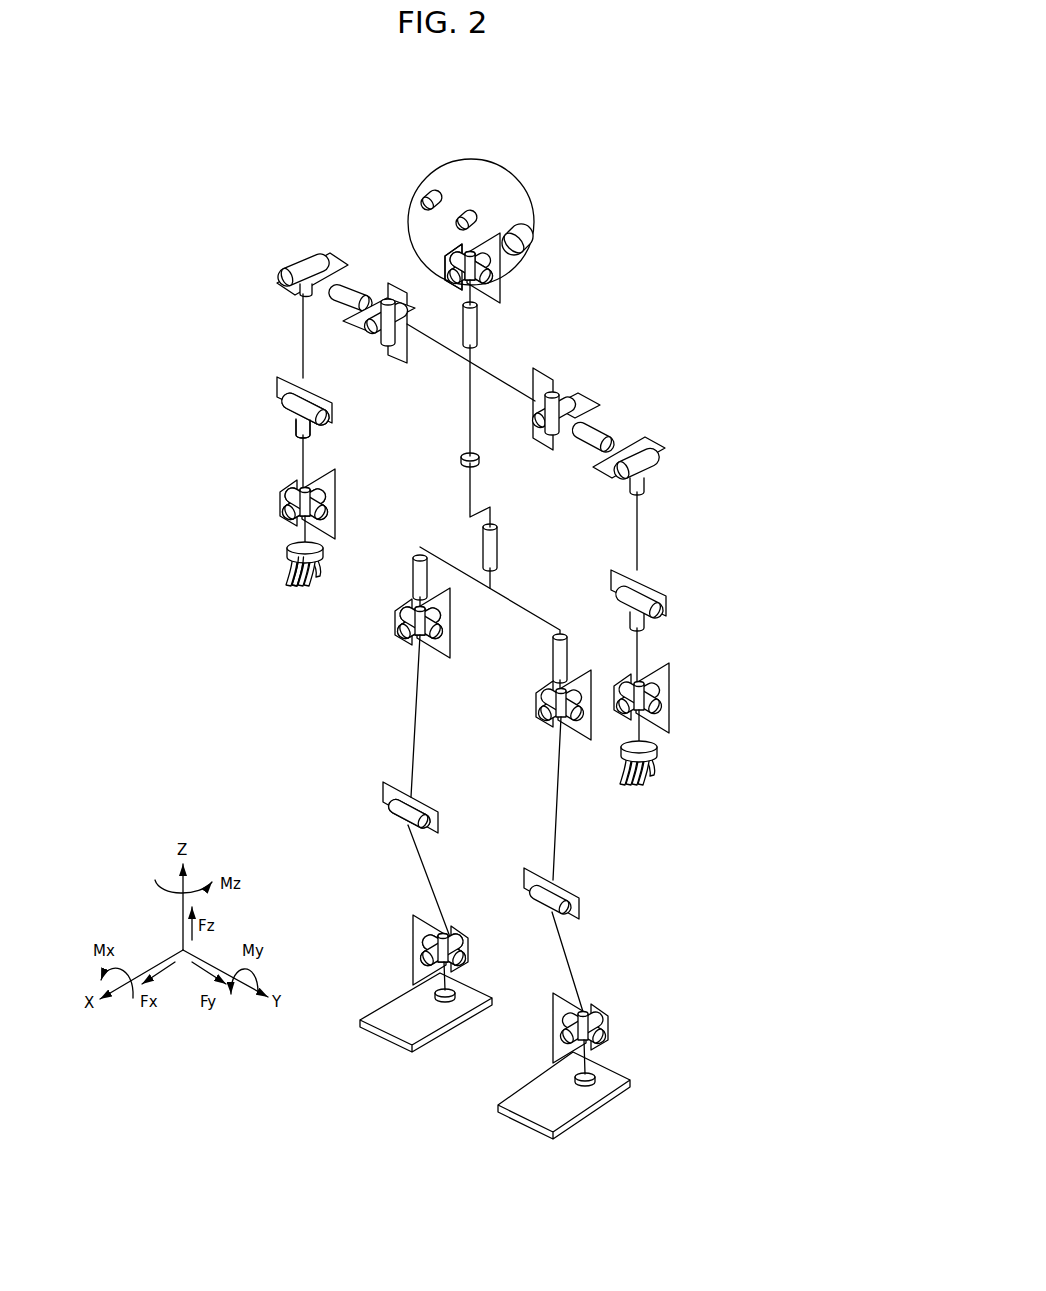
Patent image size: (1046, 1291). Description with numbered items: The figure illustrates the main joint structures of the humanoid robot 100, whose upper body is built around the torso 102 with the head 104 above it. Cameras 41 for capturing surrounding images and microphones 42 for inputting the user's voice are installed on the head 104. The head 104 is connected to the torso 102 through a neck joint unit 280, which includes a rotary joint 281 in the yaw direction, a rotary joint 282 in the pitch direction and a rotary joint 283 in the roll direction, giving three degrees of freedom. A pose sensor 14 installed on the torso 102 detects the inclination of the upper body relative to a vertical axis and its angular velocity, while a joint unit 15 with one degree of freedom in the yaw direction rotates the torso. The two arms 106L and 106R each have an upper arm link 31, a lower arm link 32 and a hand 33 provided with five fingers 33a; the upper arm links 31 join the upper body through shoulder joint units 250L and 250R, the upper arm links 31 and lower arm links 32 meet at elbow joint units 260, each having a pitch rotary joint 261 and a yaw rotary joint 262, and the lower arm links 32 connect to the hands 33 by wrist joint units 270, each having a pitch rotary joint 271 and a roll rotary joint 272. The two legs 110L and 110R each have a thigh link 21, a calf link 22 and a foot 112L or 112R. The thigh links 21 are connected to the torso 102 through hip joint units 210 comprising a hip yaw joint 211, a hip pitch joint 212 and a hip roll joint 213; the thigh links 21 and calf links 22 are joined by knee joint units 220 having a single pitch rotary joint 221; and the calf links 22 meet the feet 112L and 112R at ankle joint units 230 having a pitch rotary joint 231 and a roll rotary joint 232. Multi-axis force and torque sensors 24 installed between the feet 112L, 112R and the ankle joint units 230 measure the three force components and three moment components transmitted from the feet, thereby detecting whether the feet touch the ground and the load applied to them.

The robot 100 is at (719, 170).
The torso 102 is at (470, 410).
The head 104 is at (529, 184).
The arm 106R is at (212, 398).
The arm 106L is at (722, 580).
The leg 110R is at (327, 760).
The leg 110L is at (614, 845).
The foot 112R is at (386, 1045).
The foot 112L is at (527, 1118).
The pose sensor 14 is at (478, 465).
The joint unit 15 is at (497, 550).
The thigh link 21 is at (416, 735).
The calf link 22 is at (430, 878).
The multi-axis force and torque sensor 24 is at (450, 1000).
The upper arm link 31 is at (302, 325).
The lower arm link 32 is at (302, 447).
The hand 33 is at (286, 567).
The fingers 33a is at (303, 588).
The camera 41 is at (457, 224).
The microphone 42 is at (516, 240).
The hip joint unit 210 is at (380, 626).
The hip yaw joint 211 is at (414, 577).
The hip pitch joint 212 is at (447, 630).
The hip roll joint 213 is at (410, 640).
The knee joint unit 220 is at (379, 826).
The rotary joint 221 is at (411, 815).
The ankle joint unit 230 is at (411, 946).
The rotary joint 231 is at (466, 954).
The rotary joint 232 is at (448, 935).
The shoulder joint unit 250R is at (305, 246).
The shoulder joint unit 250L is at (609, 396).
The elbow joint unit 260 is at (262, 374).
The rotary joint 261 is at (307, 405).
The rotary joint 262 is at (316, 428).
The wrist joint unit 270 is at (275, 520).
The rotary joint 271 is at (322, 511).
The rotary joint 272 is at (320, 496).
The neck joint unit 280 is at (521, 306).
The rotary joint 281 is at (480, 330).
The rotary joint 282 is at (492, 278).
The rotary joint 283 is at (437, 275).